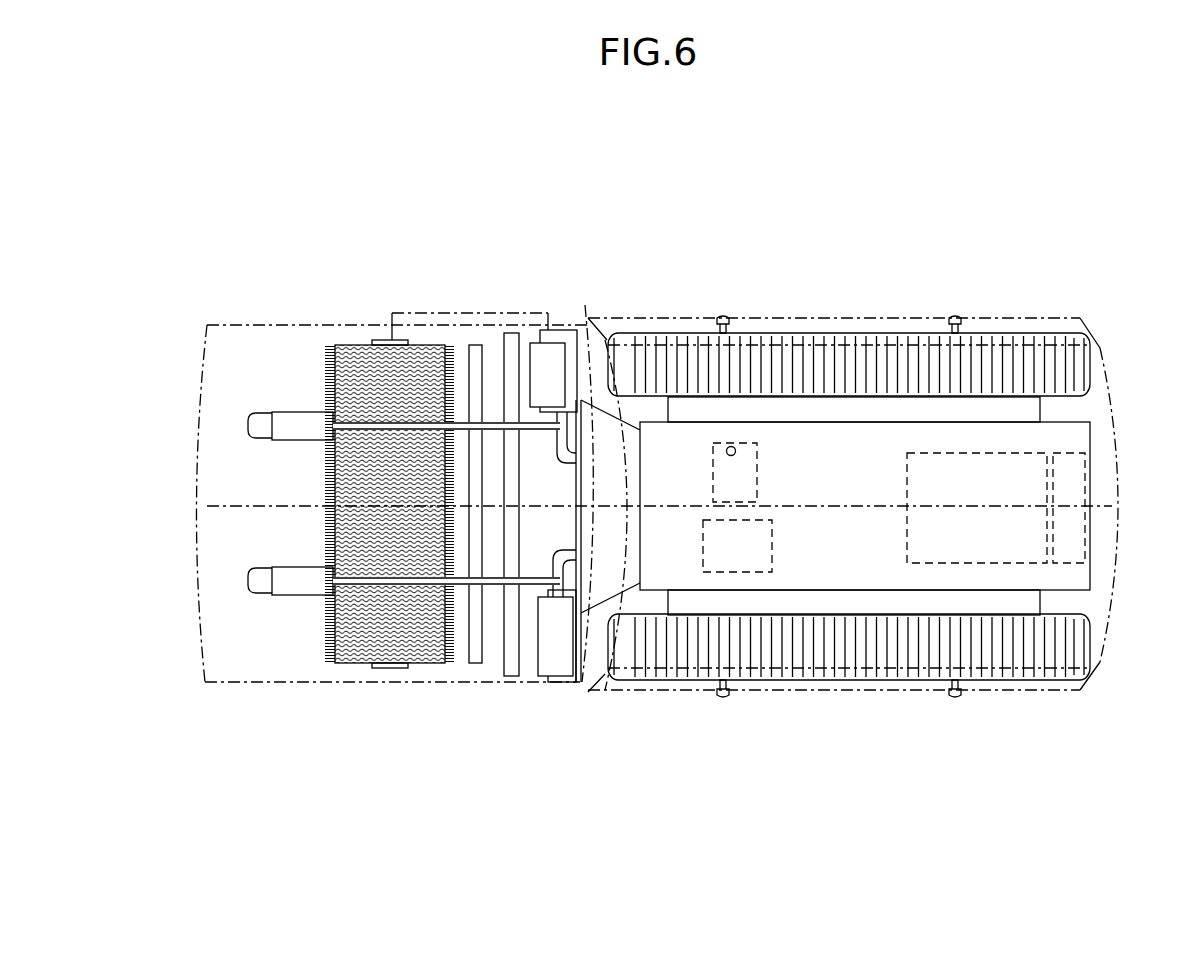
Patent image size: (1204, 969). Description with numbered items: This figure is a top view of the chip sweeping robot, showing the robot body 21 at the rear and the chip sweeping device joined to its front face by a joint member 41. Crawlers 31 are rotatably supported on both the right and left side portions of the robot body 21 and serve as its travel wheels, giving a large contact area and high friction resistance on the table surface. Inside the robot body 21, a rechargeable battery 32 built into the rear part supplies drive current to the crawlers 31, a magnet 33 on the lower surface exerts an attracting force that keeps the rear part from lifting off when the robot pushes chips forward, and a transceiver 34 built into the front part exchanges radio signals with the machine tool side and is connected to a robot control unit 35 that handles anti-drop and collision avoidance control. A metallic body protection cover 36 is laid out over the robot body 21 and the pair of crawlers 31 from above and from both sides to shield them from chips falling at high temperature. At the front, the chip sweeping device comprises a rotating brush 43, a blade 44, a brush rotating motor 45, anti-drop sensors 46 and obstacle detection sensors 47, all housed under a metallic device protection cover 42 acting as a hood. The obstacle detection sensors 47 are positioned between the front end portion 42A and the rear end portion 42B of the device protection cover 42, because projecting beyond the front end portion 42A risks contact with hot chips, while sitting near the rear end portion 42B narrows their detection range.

The robot body 21 is at (1077, 440).
The crawlers 31 is at (1003, 333).
The rechargeable battery 32 is at (1080, 537).
The magnet 33 is at (970, 563).
The transceiver 34 is at (743, 443).
The robot control unit 35 is at (755, 573).
The body protection cover 36 is at (1112, 572).
The joint member 41 is at (603, 585).
The device protection cover 42 is at (357, 501).
The front end portion 42A is at (205, 358).
The rear end portion 42B is at (585, 305).
The rotating brush 43 is at (382, 667).
The blade 44 is at (487, 657).
The brush rotating motor 45 is at (535, 350).
The anti-drop sensors 46 is at (572, 340).
The obstacle detection sensors 47 is at (248, 422).